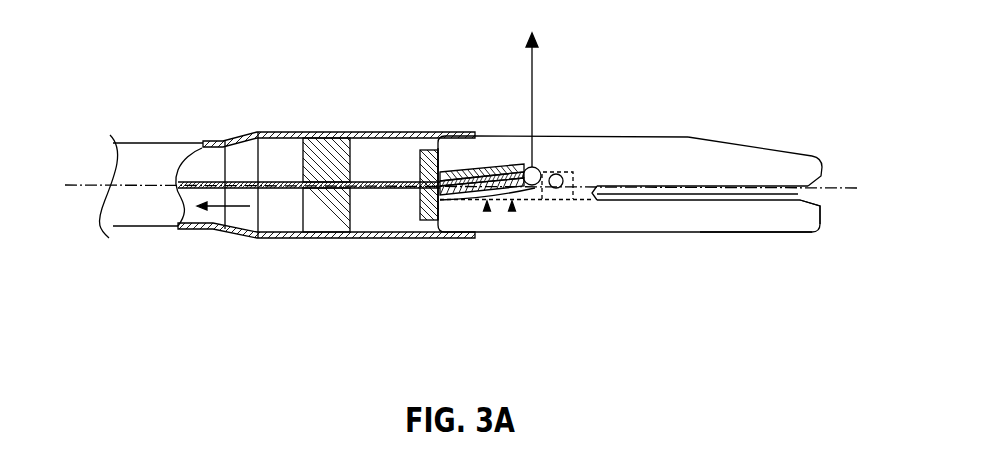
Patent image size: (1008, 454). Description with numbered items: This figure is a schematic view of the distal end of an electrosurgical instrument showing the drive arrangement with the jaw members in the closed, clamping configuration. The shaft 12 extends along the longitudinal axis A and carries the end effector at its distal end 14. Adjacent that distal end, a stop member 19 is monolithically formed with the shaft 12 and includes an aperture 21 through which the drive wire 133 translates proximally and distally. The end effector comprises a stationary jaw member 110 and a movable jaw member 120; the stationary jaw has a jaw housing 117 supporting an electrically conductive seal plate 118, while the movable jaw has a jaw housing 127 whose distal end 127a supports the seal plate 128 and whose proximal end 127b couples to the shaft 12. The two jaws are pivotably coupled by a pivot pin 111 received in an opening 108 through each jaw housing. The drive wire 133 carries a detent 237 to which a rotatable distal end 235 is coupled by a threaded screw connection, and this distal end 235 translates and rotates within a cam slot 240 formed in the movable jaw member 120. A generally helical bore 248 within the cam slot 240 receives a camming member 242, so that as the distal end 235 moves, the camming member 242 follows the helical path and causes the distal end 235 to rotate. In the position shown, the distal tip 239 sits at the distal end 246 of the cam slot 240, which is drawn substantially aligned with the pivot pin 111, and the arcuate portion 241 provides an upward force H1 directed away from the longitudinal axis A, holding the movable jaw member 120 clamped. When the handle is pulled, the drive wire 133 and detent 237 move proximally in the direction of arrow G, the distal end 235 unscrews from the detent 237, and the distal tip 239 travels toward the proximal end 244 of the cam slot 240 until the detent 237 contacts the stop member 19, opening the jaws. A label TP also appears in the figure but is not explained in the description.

The shaft 12 is at (143, 142).
The distal end 14 is at (444, 142).
The stop member 19 is at (332, 163).
The aperture 21 is at (291, 200).
The opening 108 is at (581, 163).
The jaw member 110 is at (807, 232).
The pivot pin 111 is at (586, 188).
The jaw housing 117 is at (783, 233).
The seal plate 118 is at (677, 198).
The jaw member 120 is at (807, 157).
The jaw housing 127 is at (688, 138).
The distal end 127a is at (777, 160).
The proximal end 127b is at (461, 148).
The seal plate 128 is at (672, 190).
The drive wire 133 is at (278, 182).
The rotatable distal end 235 is at (470, 194).
The detent 237 is at (429, 150).
The distal tip 239 is at (520, 166).
The cam slot 240 is at (487, 208).
The arcuate portion 241 is at (497, 168).
The camming member 242 is at (545, 202).
The proximal end 244 is at (452, 199).
The distal end 246 is at (548, 169).
The helical bore 248 is at (473, 200).
The longitudinal axis A is at (463, 185).
The directional arrow G is at (235, 208).
The upward force H1 is at (556, 100).
The tip point TP is at (512, 208).